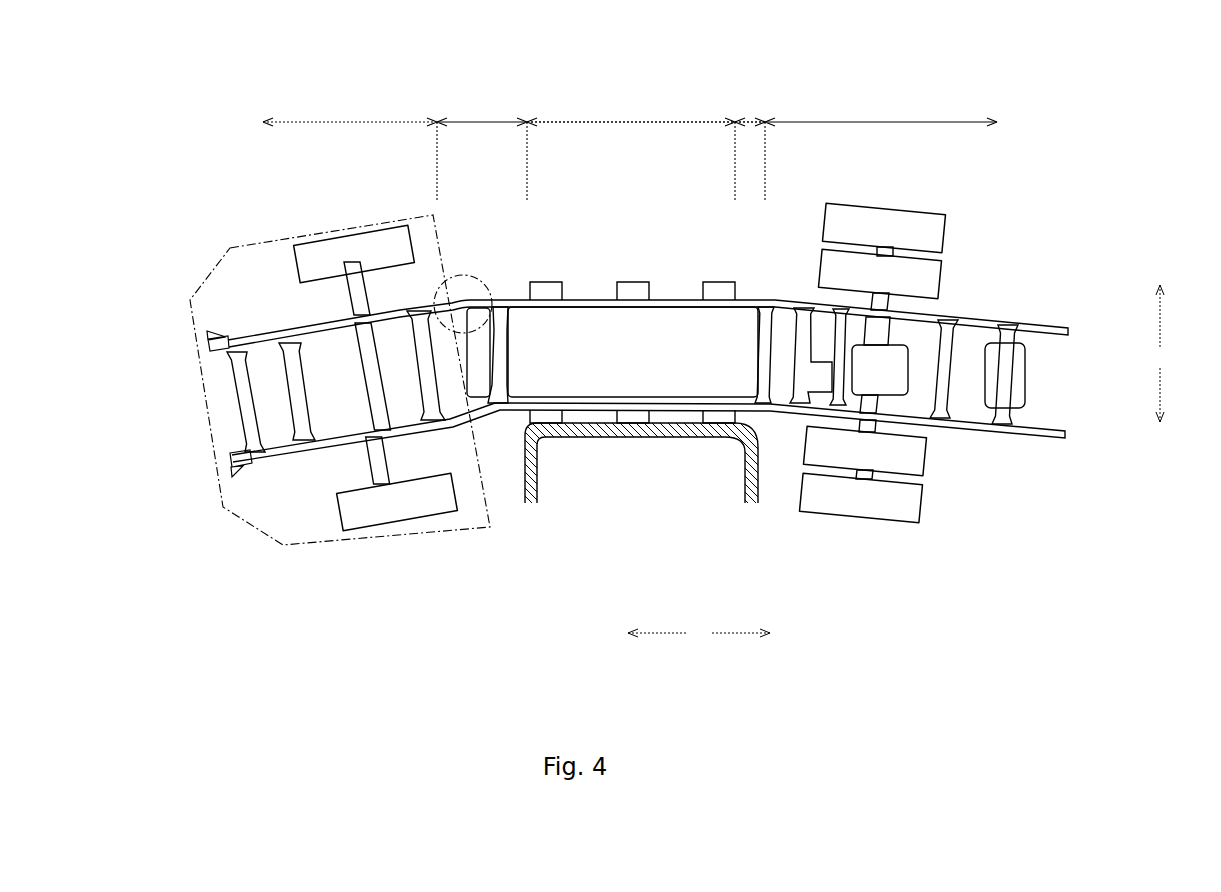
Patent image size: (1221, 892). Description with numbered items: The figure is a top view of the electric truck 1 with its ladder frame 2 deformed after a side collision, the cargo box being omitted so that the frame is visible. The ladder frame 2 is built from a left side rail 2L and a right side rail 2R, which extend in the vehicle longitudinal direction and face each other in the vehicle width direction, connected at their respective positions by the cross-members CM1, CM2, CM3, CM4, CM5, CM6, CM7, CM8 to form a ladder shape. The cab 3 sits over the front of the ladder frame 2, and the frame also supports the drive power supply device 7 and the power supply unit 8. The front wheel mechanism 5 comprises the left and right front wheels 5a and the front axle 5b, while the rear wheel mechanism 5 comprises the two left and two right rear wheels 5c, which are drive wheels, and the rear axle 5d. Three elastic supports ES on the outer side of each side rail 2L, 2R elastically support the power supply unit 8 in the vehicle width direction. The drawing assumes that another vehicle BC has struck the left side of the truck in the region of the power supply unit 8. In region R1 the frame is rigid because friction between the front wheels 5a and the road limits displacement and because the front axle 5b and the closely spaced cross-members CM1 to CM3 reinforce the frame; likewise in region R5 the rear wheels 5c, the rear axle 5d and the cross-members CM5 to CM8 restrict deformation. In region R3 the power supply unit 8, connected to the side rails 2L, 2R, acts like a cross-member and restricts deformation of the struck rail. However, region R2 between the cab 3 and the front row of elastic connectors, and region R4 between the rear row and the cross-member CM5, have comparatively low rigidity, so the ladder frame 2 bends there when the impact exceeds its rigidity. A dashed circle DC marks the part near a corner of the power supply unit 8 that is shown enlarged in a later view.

The electric truck 1 is at (248, 134).
The ladder frame 2 is at (150, 372).
The right side rail 2R is at (210, 350).
The left side rail 2L is at (232, 460).
The cab 3 is at (238, 240).
The wheel mechanism 5 is at (355, 583).
The front wheels 5a is at (330, 247).
The front axle 5b is at (392, 472).
The rear wheels 5c is at (897, 250).
The rear axle 5d is at (867, 435).
The drive power supply device 7 is at (1015, 368).
The power supply unit 8 is at (600, 323).
The cross-member CM1 is at (266, 432).
The cross-member CM2 is at (297, 419).
The cross-member CM3 is at (473, 413).
The cross-member CM4 is at (500, 389).
The cross-member CM5 is at (775, 388).
The cross-member CM6 is at (810, 422).
The cross-member CM7 is at (942, 422).
The cross-member CM8 is at (999, 432).
The deformation center DC is at (460, 278).
The elastic support ES is at (712, 282).
The another vehicle BC is at (628, 478).
The region R1 is at (630, 149).
The region R2 is at (482, 110).
The region R3 is at (631, 110).
The region R4 is at (750, 110).
The region R5 is at (881, 110).